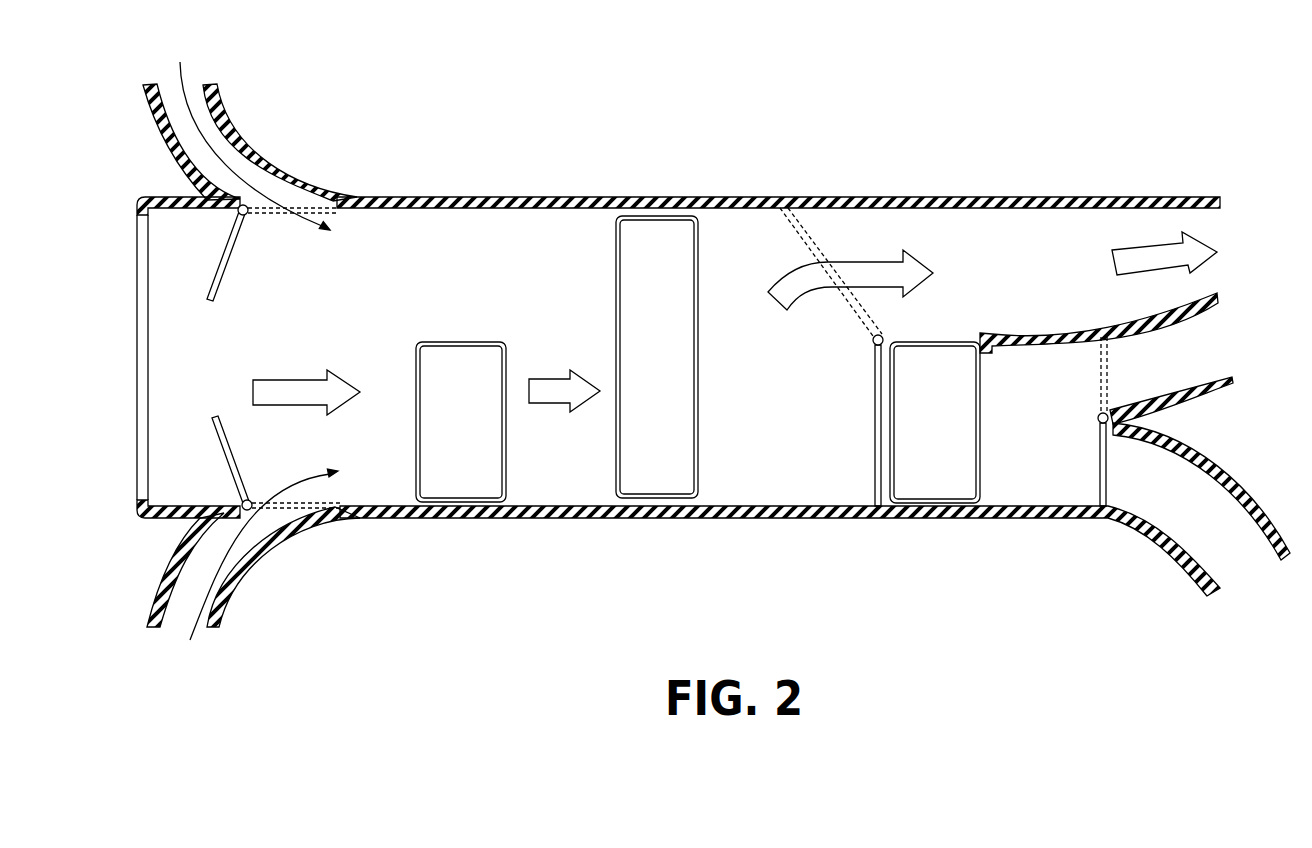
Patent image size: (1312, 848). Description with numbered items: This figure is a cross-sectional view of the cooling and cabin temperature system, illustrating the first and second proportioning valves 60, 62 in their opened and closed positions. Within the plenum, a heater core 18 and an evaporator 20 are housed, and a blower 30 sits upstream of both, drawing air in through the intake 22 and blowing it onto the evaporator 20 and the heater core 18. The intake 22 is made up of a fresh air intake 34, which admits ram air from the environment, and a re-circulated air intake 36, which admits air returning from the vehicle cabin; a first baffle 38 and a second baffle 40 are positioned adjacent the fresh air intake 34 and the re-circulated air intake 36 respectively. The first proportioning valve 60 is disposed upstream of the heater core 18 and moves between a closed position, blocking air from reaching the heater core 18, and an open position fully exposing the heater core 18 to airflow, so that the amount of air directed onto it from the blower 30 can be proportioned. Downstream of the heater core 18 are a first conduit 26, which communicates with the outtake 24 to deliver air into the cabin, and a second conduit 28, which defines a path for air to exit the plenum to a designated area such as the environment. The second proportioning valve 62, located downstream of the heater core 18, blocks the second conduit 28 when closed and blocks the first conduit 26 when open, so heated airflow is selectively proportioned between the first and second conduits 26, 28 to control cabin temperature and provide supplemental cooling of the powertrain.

The heater core 18 is at (980, 415).
The evaporator 20 is at (693, 342).
The intake 22 is at (193, 359).
The outtake 24 is at (1244, 277).
The first conduit 26 is at (1183, 374).
The second conduit 28 is at (1206, 509).
The blower 30 is at (457, 342).
The fresh air intake 34 is at (201, 137).
The re-circulated air intake 36 is at (189, 627).
The first baffle 38 is at (220, 264).
The second baffle 40 is at (230, 478).
The first proportioning valve 60 is at (880, 336).
The second proportioning valve 62 is at (1097, 421).